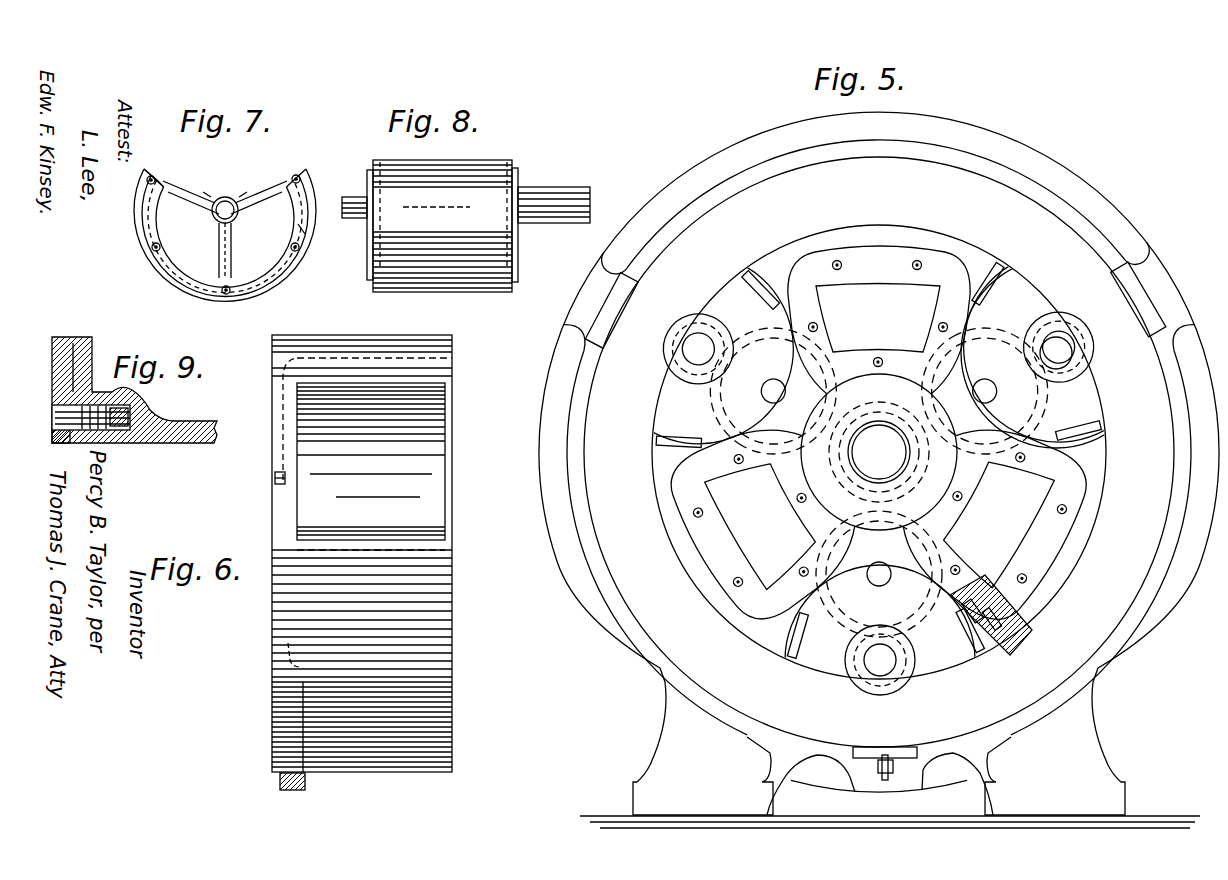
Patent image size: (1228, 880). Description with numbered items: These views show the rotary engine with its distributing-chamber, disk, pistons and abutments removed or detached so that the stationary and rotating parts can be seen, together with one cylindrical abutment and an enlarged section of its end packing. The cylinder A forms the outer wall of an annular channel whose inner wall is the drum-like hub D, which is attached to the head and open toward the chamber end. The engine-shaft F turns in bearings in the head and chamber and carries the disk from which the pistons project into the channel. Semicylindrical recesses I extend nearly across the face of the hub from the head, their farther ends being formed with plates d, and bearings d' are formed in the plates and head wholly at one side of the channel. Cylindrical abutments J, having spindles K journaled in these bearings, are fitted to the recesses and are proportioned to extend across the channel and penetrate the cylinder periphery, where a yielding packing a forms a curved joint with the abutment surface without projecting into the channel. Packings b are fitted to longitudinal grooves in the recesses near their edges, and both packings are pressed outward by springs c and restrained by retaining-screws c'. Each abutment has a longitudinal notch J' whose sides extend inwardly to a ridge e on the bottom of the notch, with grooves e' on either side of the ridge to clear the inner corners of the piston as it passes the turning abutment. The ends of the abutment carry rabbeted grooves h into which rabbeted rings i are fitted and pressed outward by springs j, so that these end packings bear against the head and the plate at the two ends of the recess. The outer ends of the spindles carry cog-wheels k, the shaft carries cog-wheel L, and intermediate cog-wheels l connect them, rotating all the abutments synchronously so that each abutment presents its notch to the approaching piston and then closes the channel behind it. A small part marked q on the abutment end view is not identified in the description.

In FIG. 5, the cylinder A is at (1122, 652).
In FIG. 5, the hub D is at (874, 227).
In FIG. 5, the engine-shaft F is at (879, 452).
In FIG. 5, the cog-wheel L is at (974, 482).
In FIG. 5, the yielding packing a is at (1118, 292).
In FIG. 5, the packings b is at (982, 652).
In FIG. 5, the springs c is at (914, 707).
In FIG. 5, the retaining-screws c' is at (947, 711).
In FIG. 6, the plates d is at (371, 466).
In FIG. 5, the plates d is at (845, 487).
In FIG. 6, the bearings d' is at (289, 637).
In FIG. 5, the bearings d' is at (1056, 325).
In FIG. 5, the cog-wheels k is at (1092, 352).
In FIG. 5, the intermediate cog-wheels l is at (1046, 402).
In FIG. 6, the semicylindrical recesses I is at (412, 772).
In FIG. 7, the cylindrical abutments J is at (225, 235).
In FIG. 8, the cylindrical abutments J is at (442, 226).
In FIG. 9, the cylindrical abutments J is at (134, 404).
In FIG. 7, the longitudinal notch J' is at (168, 164).
In FIG. 7, the spindles K is at (238, 216).
In FIG. 8, the spindles K is at (577, 187).
In FIG. 7, the rabbeted grooves h is at (298, 227).
In FIG. 8, the rabbeted grooves h is at (503, 186).
In FIG. 9, the rabbeted grooves h is at (75, 443).
In FIG. 9, the rabbeted rings i is at (53, 437).
In FIG. 7, the springs j is at (299, 251).
In FIG. 9, the springs j is at (100, 432).
In FIG. 7, the bolt q is at (226, 295).
In FIG. 7, the ridge e is at (225, 190).
In FIG. 7, the grooves e' is at (230, 187).